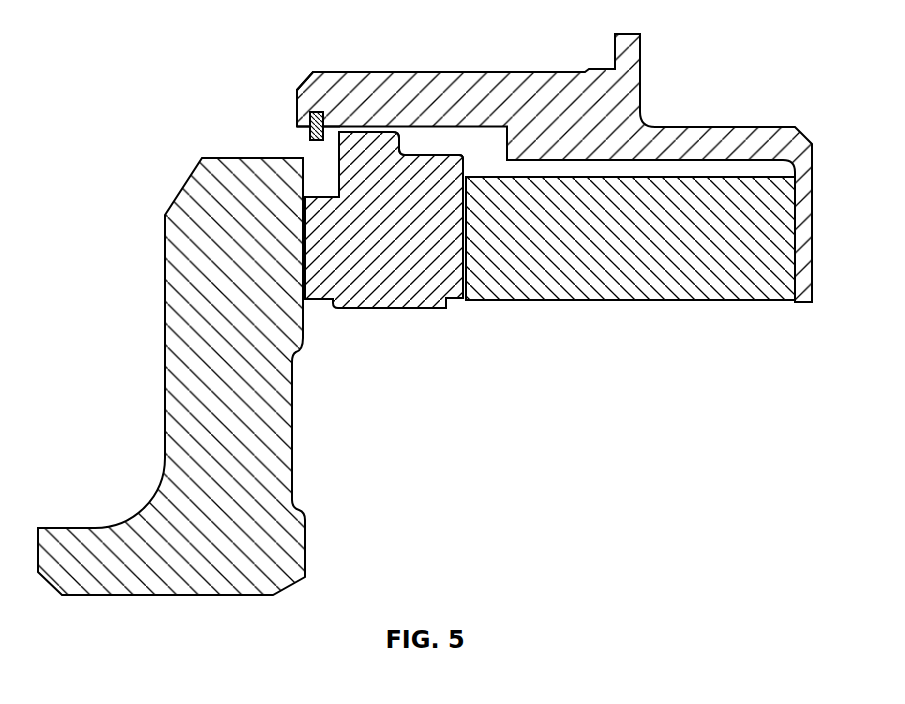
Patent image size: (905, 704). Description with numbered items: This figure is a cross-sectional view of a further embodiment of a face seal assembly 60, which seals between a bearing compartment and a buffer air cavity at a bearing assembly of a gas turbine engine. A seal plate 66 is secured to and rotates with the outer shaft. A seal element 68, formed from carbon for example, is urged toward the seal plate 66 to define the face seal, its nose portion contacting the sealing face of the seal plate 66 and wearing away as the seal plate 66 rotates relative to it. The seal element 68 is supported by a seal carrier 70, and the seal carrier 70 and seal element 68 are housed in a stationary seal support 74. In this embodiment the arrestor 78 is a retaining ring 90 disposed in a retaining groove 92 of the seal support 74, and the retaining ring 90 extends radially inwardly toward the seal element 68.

The face seal assembly 60 is at (170, 55).
The seal plate 66 is at (140, 520).
The seal element 68 is at (315, 287).
The seal carrier 70 is at (383, 163).
The seal support 74 is at (553, 84).
The arrestor 78 is at (310, 120).
The retaining ring 90 is at (308, 128).
The retaining groove 92 is at (328, 95).